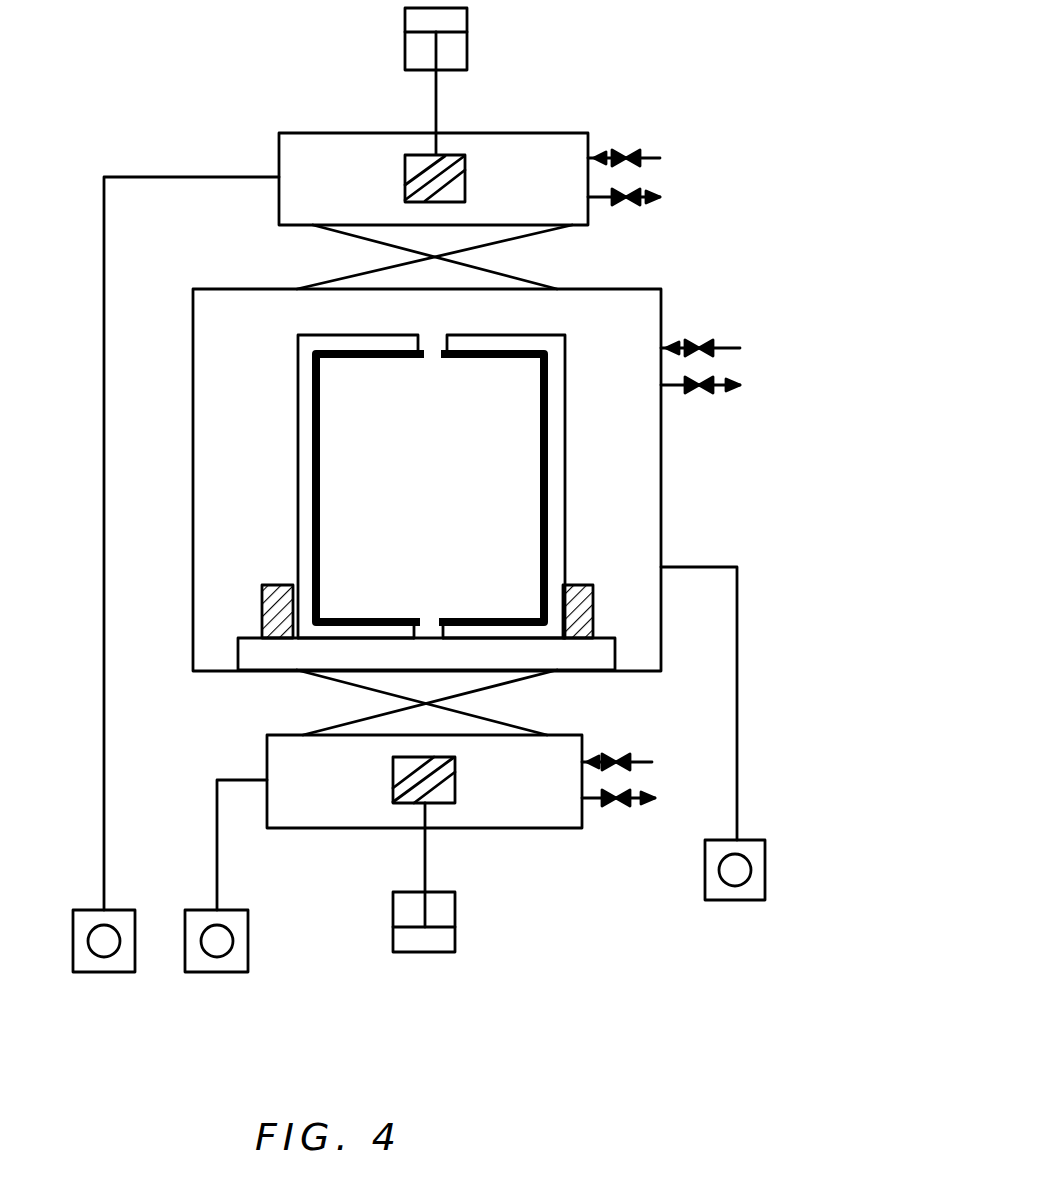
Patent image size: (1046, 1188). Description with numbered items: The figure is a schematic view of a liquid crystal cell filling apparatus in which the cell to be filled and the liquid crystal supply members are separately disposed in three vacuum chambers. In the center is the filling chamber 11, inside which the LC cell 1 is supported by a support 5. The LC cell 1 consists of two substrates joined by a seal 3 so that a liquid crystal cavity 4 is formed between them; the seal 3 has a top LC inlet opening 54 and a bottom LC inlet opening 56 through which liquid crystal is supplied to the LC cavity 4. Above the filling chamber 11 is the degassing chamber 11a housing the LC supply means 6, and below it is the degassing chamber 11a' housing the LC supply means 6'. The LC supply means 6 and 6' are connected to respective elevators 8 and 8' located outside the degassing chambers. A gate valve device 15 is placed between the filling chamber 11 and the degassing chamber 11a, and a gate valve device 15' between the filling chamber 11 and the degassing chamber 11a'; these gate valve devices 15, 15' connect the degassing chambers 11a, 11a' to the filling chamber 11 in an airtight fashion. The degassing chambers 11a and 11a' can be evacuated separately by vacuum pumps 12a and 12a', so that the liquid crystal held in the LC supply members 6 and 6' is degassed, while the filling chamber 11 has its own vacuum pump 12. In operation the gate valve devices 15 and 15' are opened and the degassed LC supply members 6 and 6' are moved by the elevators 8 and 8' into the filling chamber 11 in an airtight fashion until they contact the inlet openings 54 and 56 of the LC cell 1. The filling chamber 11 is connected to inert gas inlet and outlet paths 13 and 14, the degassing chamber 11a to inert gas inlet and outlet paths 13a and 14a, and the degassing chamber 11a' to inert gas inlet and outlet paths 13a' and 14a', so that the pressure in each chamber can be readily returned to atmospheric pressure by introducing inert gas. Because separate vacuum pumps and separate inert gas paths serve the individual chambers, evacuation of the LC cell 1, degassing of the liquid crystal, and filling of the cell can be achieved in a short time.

The liquid crystal cell 1 is at (572, 457).
The seal 3 is at (566, 410).
The liquid crystal cavity 4 is at (340, 467).
The support 5 is at (593, 592).
The LC supply means 6 is at (478, 178).
The LC supply means 6' is at (459, 788).
The elevator 8 is at (473, 81).
The elevator 8' is at (463, 886).
The filling chamber 11 is at (661, 535).
The degassing chamber 11a is at (453, 149).
The degassing chamber 11a' is at (424, 819).
The vacuum pump 12 is at (767, 852).
The vacuum pump 12a is at (122, 979).
The vacuum pump 12a' is at (247, 977).
The inert gas inlet path 13 is at (740, 348).
The inert gas inlet path 13a is at (660, 135).
The inert gas inlet path 13a' is at (651, 735).
The inert gas outlet path 14 is at (714, 392).
The inert gas outlet path 14a is at (670, 220).
The inert gas outlet path 14a' is at (623, 844).
The gate valve device 15 is at (462, 257).
The gate valve device 15' is at (454, 702).
The top LC inlet opening 54 is at (434, 352).
The bottom LC inlet opening 56 is at (430, 618).